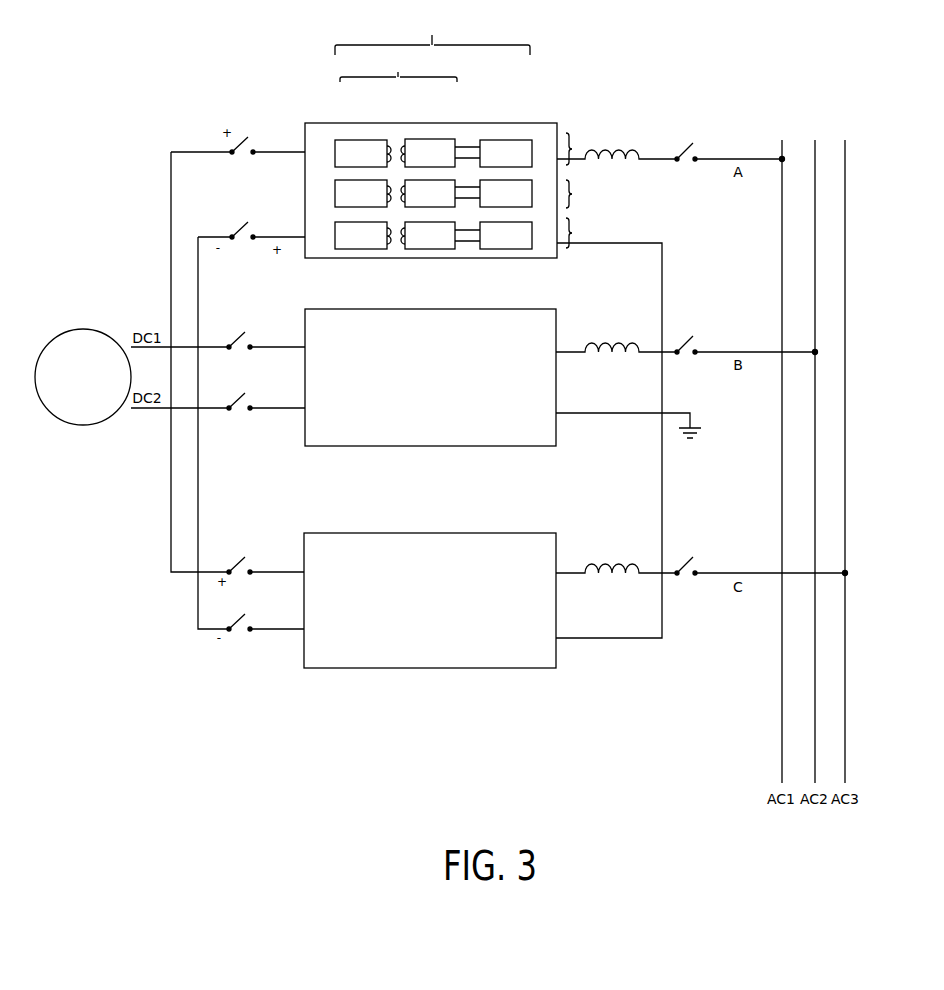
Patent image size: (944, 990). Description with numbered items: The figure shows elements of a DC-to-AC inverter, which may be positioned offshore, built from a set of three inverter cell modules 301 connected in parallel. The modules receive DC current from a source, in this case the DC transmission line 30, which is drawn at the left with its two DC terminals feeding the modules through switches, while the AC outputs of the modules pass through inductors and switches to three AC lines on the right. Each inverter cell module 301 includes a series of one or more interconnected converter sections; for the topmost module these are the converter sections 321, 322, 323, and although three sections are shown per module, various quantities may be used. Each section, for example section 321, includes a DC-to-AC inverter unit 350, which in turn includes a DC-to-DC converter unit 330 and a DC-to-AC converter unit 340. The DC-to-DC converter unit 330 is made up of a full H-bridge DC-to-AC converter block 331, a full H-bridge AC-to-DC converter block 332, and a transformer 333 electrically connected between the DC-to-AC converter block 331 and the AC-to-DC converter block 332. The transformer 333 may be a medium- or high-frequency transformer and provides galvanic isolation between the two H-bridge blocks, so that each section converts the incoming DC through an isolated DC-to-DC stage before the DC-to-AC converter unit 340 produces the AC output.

The DC transmission line 30 is at (83, 377).
The inverter cell module 301 is at (517, 123).
The DC-to-AC inverter unit 350 is at (432, 32).
The DC-to-DC converter unit 330 is at (398, 66).
The full H-bridge DC-to-AC converter block 331 is at (361, 194).
The full H-bridge AC-to-DC converter block 332 is at (430, 194).
The transformer 333 is at (391, 129).
The DC-to-AC converter unit 340 is at (493, 194).
The first converter section 321 is at (580, 146).
The second converter section 322 is at (580, 194).
The third converter section 323 is at (580, 233).